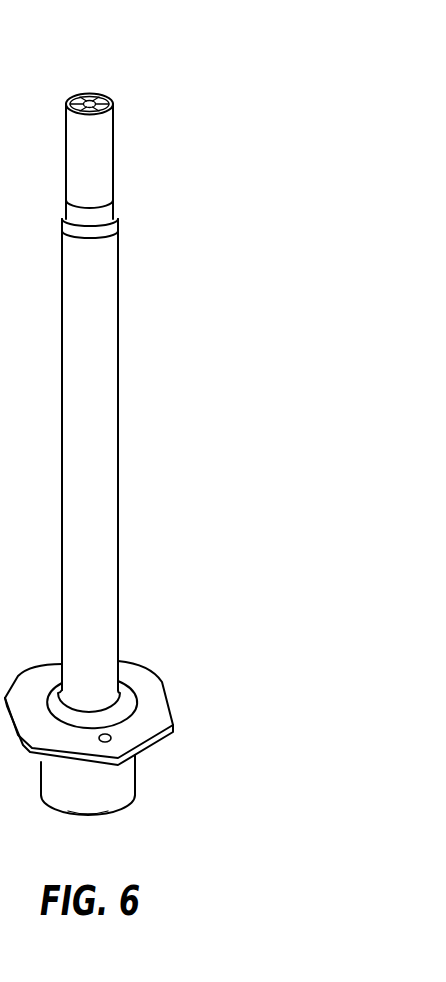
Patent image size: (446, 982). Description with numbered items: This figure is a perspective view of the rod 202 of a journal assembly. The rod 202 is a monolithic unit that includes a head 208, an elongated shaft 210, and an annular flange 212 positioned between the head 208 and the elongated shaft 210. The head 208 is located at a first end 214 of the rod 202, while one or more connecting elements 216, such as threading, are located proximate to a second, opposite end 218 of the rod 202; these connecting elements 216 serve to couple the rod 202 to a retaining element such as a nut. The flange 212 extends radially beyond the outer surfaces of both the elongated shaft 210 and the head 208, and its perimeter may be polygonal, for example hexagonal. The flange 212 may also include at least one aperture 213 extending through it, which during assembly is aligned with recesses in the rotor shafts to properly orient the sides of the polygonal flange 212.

The rod 202 is at (228, 166).
The head 208 is at (117, 780).
The elongated shaft 210 is at (102, 413).
The annular flange 212 is at (175, 716).
The aperture 213 is at (115, 724).
The first end 214 is at (105, 815).
The connecting elements 216 is at (95, 158).
The second end 218 is at (101, 92).